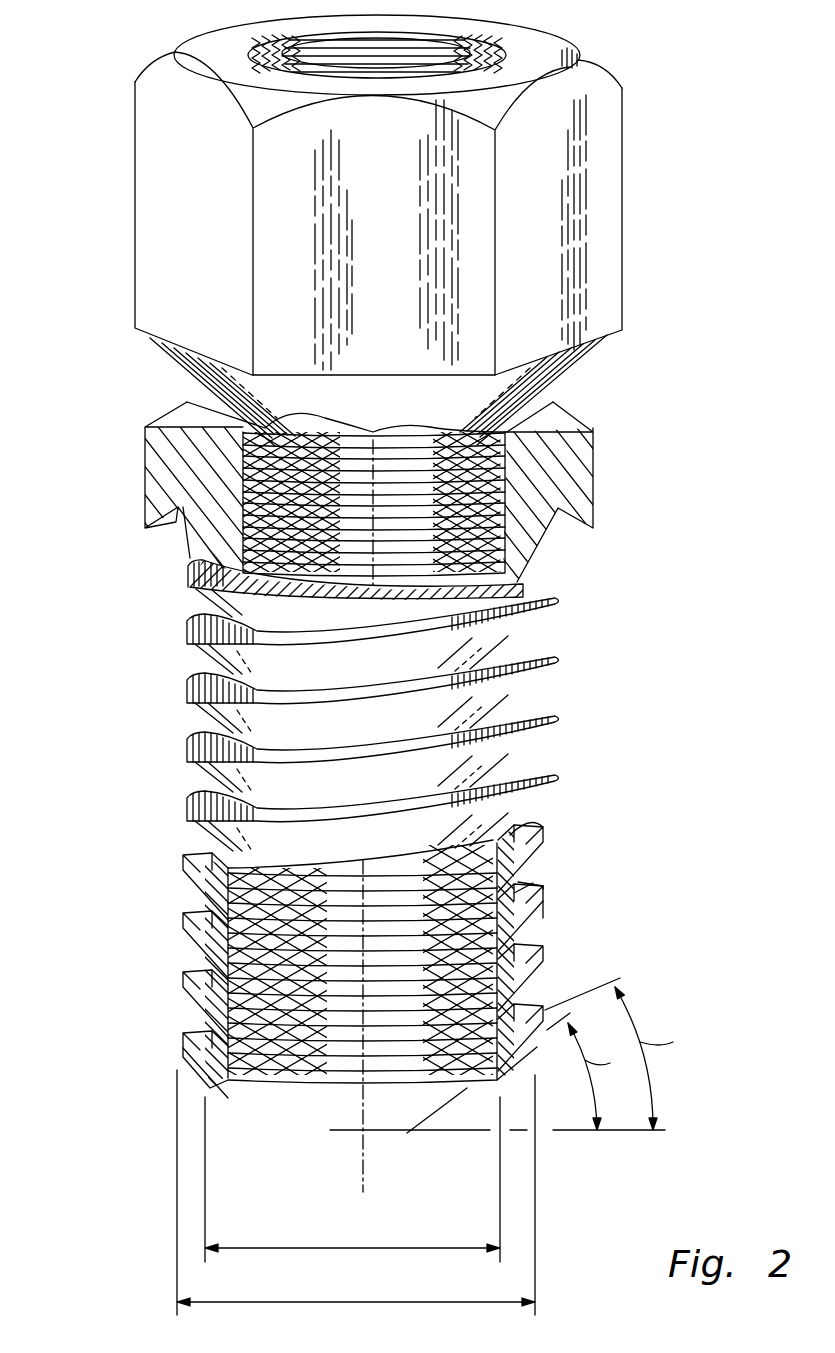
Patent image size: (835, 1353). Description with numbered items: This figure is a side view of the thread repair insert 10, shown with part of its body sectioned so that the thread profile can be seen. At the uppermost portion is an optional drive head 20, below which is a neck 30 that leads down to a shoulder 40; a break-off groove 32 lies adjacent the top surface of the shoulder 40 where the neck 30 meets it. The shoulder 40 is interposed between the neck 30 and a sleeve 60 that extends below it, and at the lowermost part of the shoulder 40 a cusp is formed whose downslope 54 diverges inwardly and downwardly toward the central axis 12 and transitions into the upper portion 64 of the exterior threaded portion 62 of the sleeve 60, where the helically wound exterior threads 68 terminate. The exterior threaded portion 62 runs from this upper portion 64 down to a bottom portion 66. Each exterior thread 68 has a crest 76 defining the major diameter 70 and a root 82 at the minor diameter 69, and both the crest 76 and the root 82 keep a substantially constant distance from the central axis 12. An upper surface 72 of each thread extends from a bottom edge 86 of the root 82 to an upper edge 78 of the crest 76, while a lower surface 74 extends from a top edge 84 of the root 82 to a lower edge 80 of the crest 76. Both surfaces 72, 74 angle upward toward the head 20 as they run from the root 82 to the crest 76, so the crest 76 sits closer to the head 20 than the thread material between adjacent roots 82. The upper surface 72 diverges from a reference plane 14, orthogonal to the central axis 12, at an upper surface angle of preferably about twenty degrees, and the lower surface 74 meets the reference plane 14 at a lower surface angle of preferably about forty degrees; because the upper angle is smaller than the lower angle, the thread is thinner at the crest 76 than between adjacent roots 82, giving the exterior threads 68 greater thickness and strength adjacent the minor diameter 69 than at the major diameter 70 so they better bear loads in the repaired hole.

The thread repair insert 10 is at (388, 662).
The central axis 12 is at (362, 1160).
The reference plane 14 is at (572, 1130).
The drive head 20 is at (637, 207).
The neck 30 is at (592, 368).
The break-off groove 32 is at (572, 408).
The shoulder 40 is at (361, 501).
The downslope 54 is at (180, 530).
The sleeve 60 is at (415, 701).
The exterior threaded portion 62 is at (388, 958).
The upper portion 64 is at (520, 580).
The bottom portion 66 is at (360, 1113).
The exterior threads 68 is at (520, 637).
The minor diameter 69 is at (410, 1247).
The major diameter 70 is at (353, 1302).
The upper surface 72 is at (193, 975).
The lower surface 74 is at (200, 1013).
The crest 76 is at (537, 845).
The upper edge 78 is at (543, 888).
The lower edge 80 is at (543, 918).
The root 82 is at (510, 835).
The top edge 84 is at (518, 882).
The bottom edge 86 is at (533, 883).